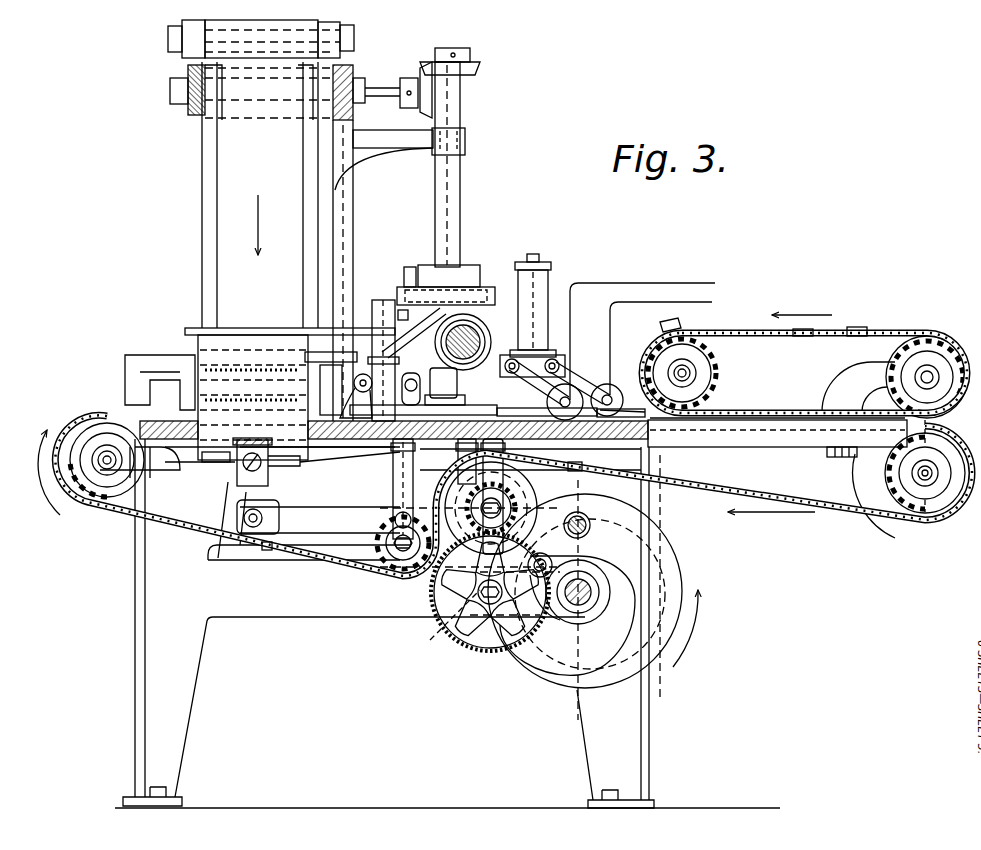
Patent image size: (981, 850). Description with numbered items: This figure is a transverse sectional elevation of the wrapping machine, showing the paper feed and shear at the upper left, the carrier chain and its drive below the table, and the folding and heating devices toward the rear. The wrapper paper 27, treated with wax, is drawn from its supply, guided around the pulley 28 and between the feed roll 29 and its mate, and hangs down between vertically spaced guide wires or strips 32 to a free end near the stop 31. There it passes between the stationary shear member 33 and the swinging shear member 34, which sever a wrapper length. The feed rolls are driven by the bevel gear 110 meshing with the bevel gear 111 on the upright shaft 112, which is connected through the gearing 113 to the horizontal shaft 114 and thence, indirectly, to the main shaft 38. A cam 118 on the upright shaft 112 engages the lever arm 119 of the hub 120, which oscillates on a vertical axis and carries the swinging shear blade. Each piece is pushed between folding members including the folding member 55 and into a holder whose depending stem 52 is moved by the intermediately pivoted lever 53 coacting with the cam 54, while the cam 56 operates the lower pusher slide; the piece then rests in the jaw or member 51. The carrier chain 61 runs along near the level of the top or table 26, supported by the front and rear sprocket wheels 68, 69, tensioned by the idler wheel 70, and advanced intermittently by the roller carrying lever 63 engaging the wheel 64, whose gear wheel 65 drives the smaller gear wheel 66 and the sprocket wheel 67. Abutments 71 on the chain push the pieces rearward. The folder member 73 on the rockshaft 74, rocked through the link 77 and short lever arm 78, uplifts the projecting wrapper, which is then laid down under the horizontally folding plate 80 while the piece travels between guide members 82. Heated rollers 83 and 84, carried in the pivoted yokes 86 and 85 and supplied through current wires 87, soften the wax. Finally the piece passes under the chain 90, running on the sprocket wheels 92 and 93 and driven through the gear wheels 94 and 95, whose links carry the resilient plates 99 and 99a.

The top or table 26 is at (645, 440).
The wrapper paper 27 is at (260, 195).
The pulley 28 is at (185, 52).
The feed roll 29 is at (280, 120).
The stop 31 is at (218, 463).
The guide wires or strips 32 is at (215, 280).
The stationary shear member 33 is at (268, 310).
The swinging shear member 34 is at (185, 337).
The main shaft 38 is at (240, 440).
The jaw or member 51 is at (352, 462).
The depending stem 52 is at (230, 505).
The intermediately pivoted lever 53 is at (318, 517).
The cam 54 is at (640, 520).
The folding member 55 is at (125, 385).
The cam 56 is at (560, 685).
The carrier chain 61 is at (282, 560).
The roller carrying lever 63 is at (569, 568).
The wheel 64 is at (462, 645).
The gear wheel 65 is at (432, 632).
The smaller gear wheel 66 is at (505, 497).
The sprocket wheel 67 is at (470, 514).
The sprocket wheel 68 is at (100, 500).
The sprocket wheel 69 is at (940, 510).
The idler and sprocket guiding and tensioning wheel 70 is at (393, 576).
The abutments 71 is at (188, 542).
The folder member 73 is at (328, 413).
The rockshaft 74 is at (362, 374).
The link 77 is at (393, 492).
The short lever arm 78 is at (390, 400).
The horizontally folding plate 80 is at (495, 405).
The guide members 82 is at (622, 400).
The rollers 83 is at (594, 372).
The roller 84 is at (615, 380).
The pivoted yoke 85 is at (520, 355).
The pivoted yoke 86 is at (550, 385).
The current wires 87 is at (697, 275).
The chain 90 is at (762, 420).
The sprocket wheel 92 is at (705, 352).
The sprocket wheel 93 is at (882, 352).
The gear wheel 94 is at (885, 490).
The gear wheel 95 is at (945, 345).
The resilient flat plate 99 is at (797, 462).
The resilient plate 99a is at (860, 327).
The bevel gear 110 is at (420, 85).
The bevel gear 111 is at (470, 70).
The upright shaft 112 is at (450, 212).
The gearing 113 is at (372, 330).
The horizontal shaft 114 is at (475, 328).
The cam 118 is at (470, 290).
The lever arm 119 is at (408, 290).
The hub 120 is at (398, 305).